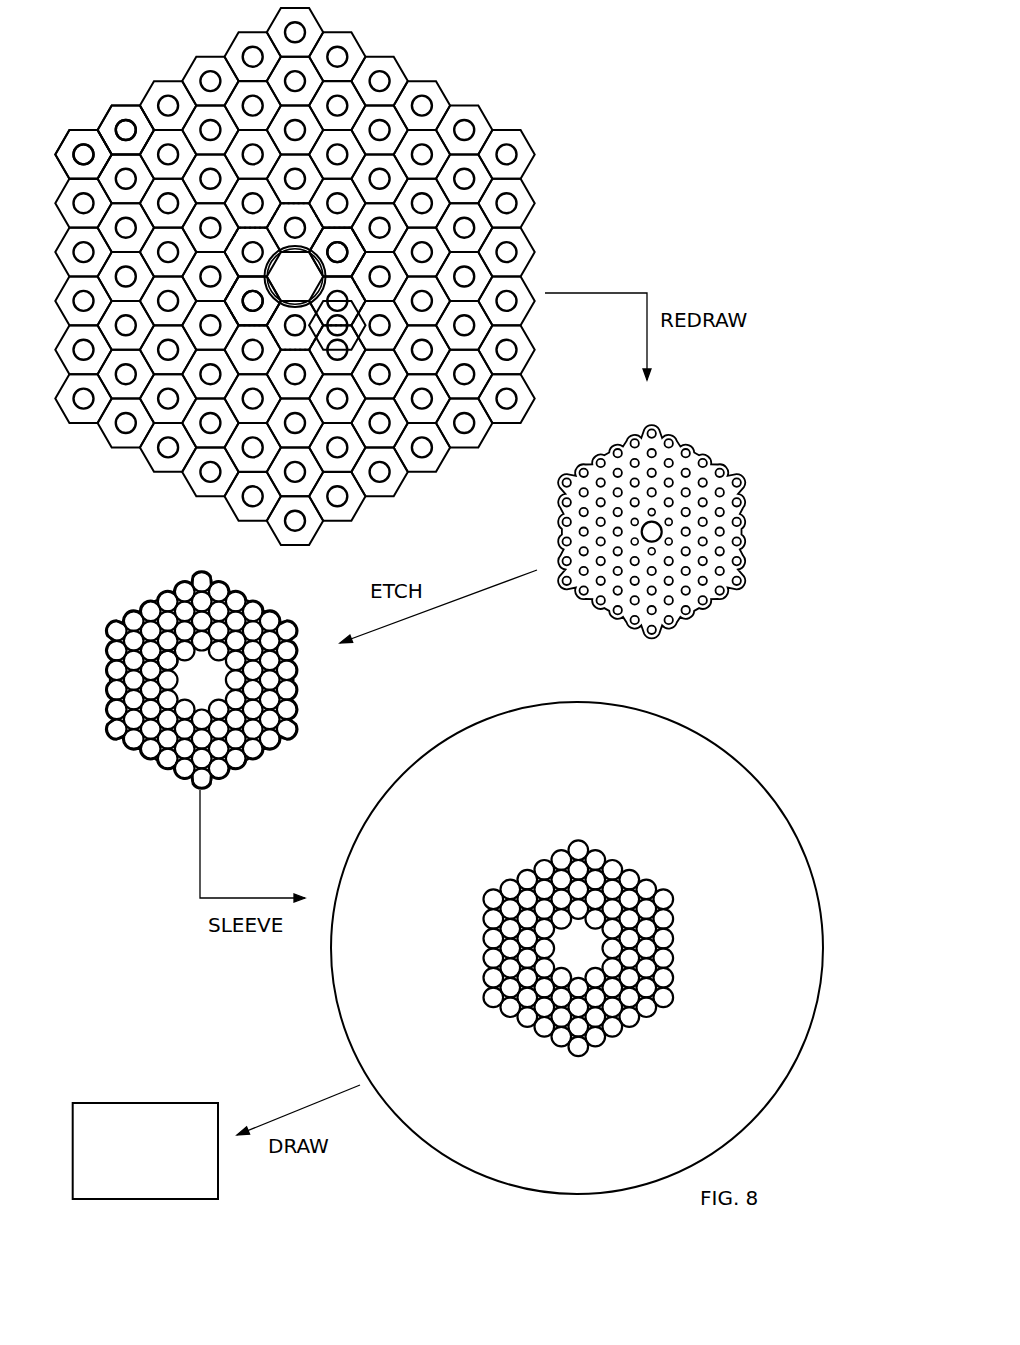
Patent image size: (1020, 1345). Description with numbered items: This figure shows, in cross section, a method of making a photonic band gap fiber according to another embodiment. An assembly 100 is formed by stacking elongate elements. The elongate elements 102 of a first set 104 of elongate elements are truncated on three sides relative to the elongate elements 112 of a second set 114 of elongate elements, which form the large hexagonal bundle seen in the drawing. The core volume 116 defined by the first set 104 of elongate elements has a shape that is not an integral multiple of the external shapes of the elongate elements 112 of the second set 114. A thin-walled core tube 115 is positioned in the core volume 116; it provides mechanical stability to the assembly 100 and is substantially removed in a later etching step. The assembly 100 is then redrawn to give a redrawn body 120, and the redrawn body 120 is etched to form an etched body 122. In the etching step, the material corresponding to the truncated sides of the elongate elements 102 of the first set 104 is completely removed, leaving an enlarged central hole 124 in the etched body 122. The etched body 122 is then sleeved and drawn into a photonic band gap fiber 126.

The assembly 100 is at (496, 74).
The elongate elements of the first set 102 is at (343, 318).
The first set of elongate elements 104 is at (247, 327).
The elongate elements of the second set 112 is at (150, 102).
The second set of elongate elements 114 is at (177, 72).
The central core tube 115 is at (328, 277).
The core volume 116 is at (333, 228).
The redrawn body 120 is at (580, 622).
The etched body 122 is at (125, 760).
The hole 124 is at (165, 665).
The photonic band gap fiber 126 is at (107, 1103).